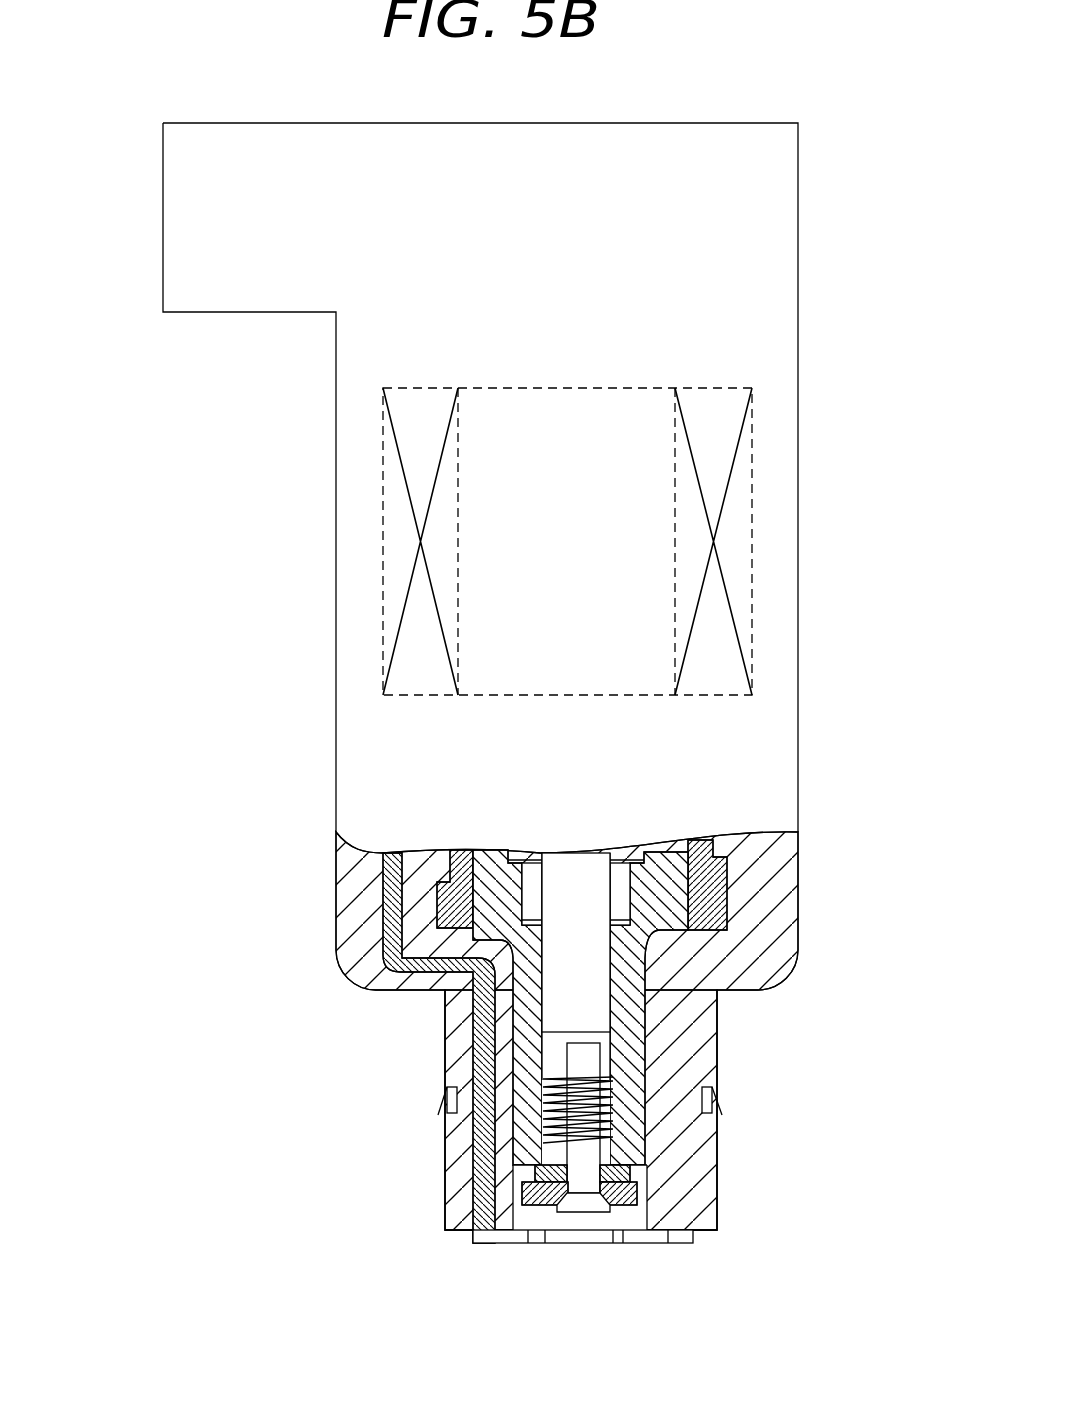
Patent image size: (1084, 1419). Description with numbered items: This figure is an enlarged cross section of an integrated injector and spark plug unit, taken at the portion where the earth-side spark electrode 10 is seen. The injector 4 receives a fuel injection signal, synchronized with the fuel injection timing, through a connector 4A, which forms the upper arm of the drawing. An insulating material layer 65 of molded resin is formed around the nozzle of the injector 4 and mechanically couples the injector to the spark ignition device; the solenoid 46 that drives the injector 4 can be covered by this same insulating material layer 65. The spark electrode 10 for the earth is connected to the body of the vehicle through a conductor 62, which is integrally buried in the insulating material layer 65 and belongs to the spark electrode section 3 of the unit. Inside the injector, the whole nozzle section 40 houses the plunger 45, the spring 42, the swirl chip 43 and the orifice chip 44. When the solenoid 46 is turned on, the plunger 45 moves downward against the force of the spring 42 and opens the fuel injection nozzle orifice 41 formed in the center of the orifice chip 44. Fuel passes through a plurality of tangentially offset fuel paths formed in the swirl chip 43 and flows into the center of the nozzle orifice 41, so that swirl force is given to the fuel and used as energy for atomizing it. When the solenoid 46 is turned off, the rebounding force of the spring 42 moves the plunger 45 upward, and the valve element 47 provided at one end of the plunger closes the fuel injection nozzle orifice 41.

The spark electrode section 3 is at (718, 1210).
The injector 4 is at (800, 432).
The connector 4A is at (187, 243).
The spark electrode 10 is at (470, 1230).
The nozzle section 40 is at (640, 962).
The fuel injection nozzle orifice 41 is at (567, 1215).
The spring 42 is at (615, 1082).
The swirl chip 43 is at (622, 1165).
The orifice chip 44 is at (533, 1180).
The plunger 45 is at (583, 1013).
The solenoid 46 is at (733, 677).
The valve element 47 is at (587, 1210).
The conductor 62 is at (380, 900).
The insulating material layer 65 is at (790, 866).